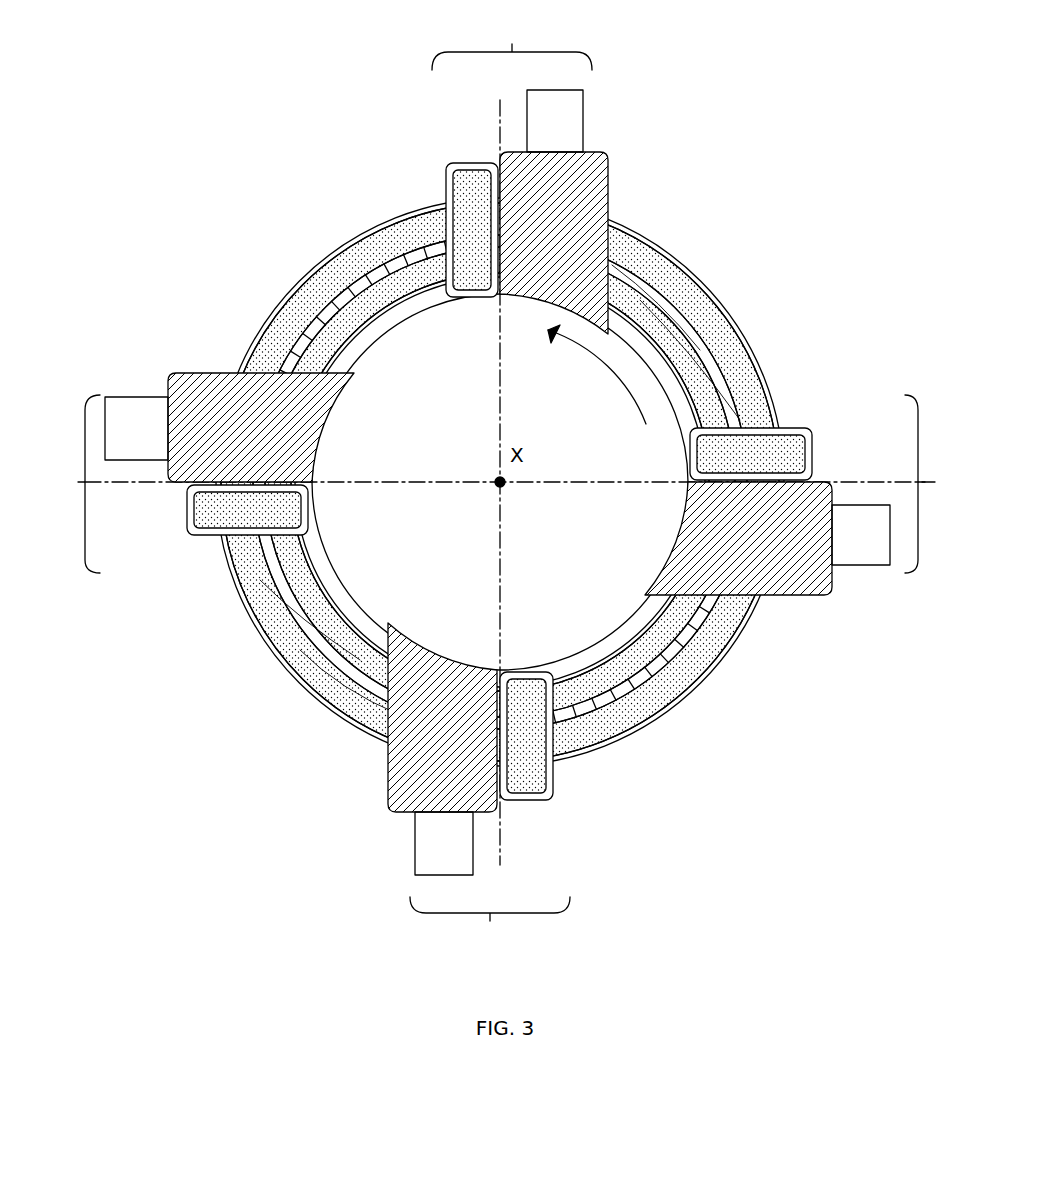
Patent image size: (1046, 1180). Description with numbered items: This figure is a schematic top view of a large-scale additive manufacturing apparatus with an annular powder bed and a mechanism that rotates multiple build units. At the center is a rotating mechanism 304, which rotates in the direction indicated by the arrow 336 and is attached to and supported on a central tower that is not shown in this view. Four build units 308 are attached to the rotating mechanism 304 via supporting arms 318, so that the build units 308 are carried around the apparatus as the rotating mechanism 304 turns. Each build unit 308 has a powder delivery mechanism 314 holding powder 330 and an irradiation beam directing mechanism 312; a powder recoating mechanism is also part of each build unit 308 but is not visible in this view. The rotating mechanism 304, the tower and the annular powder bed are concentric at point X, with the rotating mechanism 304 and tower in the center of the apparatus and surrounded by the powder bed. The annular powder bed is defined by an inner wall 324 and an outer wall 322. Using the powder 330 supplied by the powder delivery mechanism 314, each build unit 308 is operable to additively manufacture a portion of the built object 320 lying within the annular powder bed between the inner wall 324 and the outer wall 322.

The central rotating mechanism 304 is at (508, 482).
The build unit 308 is at (501, 484).
The irradiation beam directing mechanism 312 is at (125, 397).
The powder delivery mechanism 314 is at (798, 432).
The supporting arm 318 is at (200, 373).
The built object 320 is at (705, 342).
The outer wall 322 is at (618, 305).
The inner wall 324 is at (703, 283).
The powder 330 is at (503, 506).
The arrow 336 is at (620, 383).